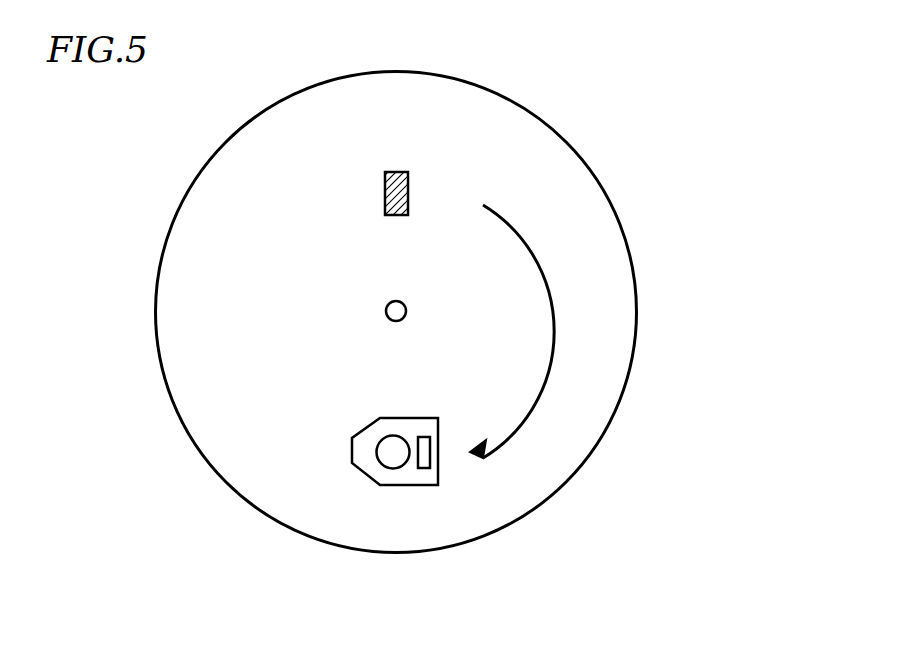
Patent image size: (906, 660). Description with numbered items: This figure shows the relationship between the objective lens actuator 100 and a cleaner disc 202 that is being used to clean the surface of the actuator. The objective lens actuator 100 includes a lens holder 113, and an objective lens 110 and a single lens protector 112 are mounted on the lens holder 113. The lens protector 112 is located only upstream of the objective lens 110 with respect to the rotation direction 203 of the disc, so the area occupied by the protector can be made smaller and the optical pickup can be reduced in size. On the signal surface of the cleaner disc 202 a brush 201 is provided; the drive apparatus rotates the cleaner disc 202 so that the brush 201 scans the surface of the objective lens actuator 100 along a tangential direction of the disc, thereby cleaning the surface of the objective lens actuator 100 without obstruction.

The objective lens actuator 100 is at (350, 518).
The objective lens 110 is at (390, 462).
The lens protector 112 is at (469, 528).
The lens holder 113 is at (370, 462).
The brush 201 is at (388, 172).
The cleaner disc 202 is at (228, 245).
The rotation direction 203 is at (550, 362).